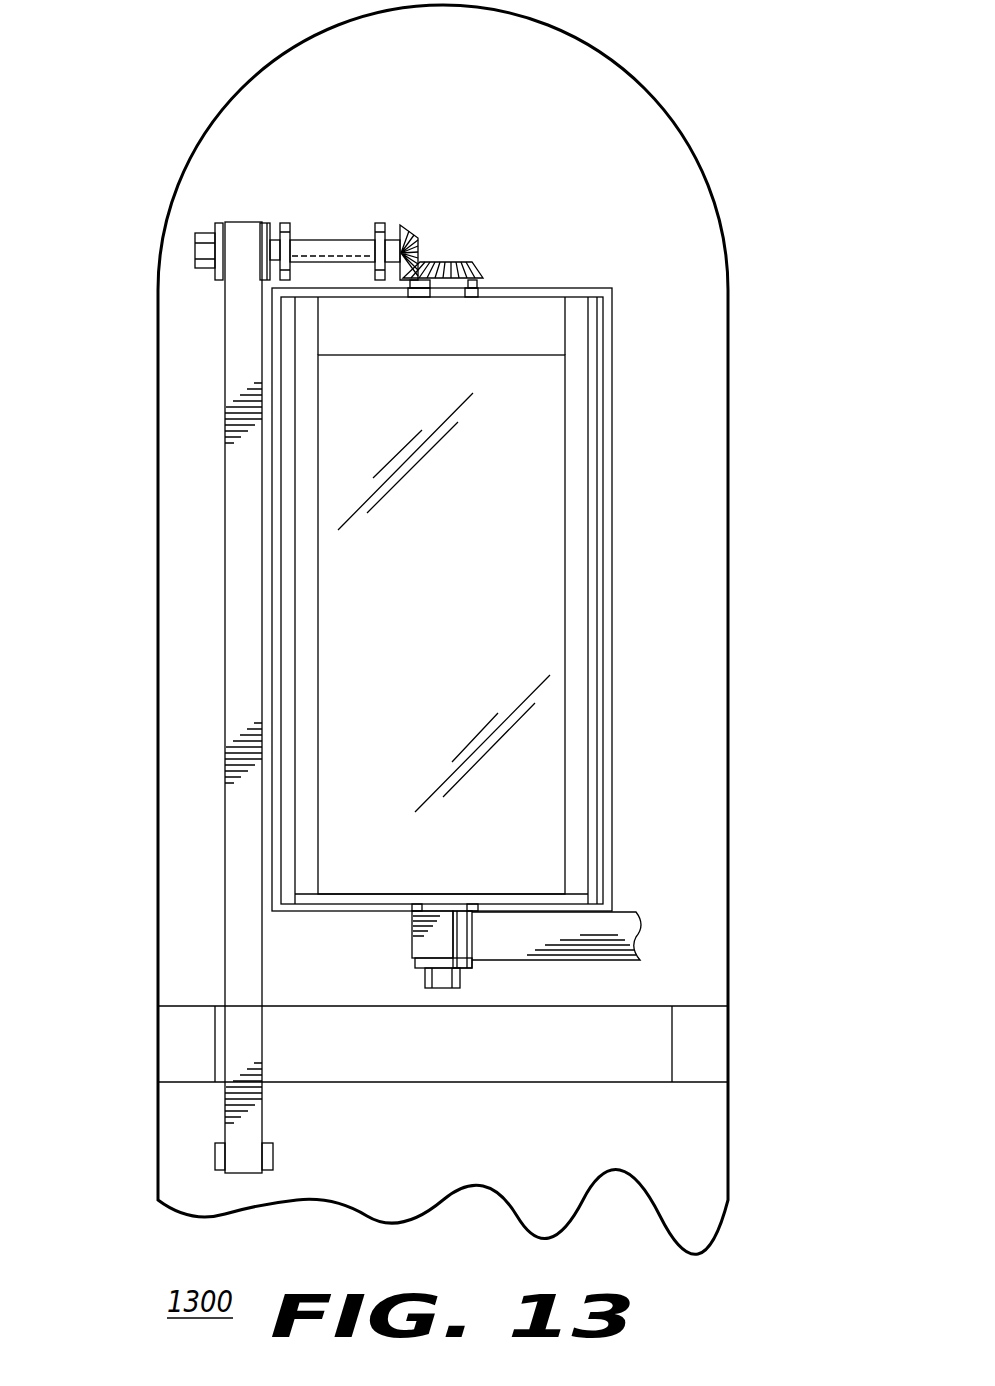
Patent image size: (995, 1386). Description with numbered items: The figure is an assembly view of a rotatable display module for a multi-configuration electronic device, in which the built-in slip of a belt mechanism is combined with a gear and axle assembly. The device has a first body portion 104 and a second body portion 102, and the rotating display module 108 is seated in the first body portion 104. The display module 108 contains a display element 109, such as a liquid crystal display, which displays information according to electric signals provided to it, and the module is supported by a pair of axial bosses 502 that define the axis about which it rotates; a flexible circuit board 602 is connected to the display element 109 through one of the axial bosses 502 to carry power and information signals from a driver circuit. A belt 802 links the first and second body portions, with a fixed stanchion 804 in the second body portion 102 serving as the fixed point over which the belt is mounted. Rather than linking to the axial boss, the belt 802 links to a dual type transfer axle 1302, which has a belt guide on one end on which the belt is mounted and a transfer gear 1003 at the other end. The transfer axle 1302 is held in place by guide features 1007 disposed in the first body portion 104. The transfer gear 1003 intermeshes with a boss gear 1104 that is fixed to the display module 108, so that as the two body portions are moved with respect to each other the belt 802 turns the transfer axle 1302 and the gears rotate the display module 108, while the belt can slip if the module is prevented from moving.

The second body portion 102 is at (730, 1150).
The first body portion 104 is at (730, 752).
The rotating display module 108 is at (605, 447).
The display panel 109 is at (468, 618).
The axial boss 502 is at (440, 283).
The flexible circuit board 602 is at (600, 958).
The belt 802 is at (225, 826).
The fixed stanchion 804 is at (275, 1160).
The transfer gear 1003 is at (404, 238).
The guide features 1007 is at (285, 223).
The boss gear 1104 is at (470, 262).
The dual type transfer axle 1302 is at (333, 240).